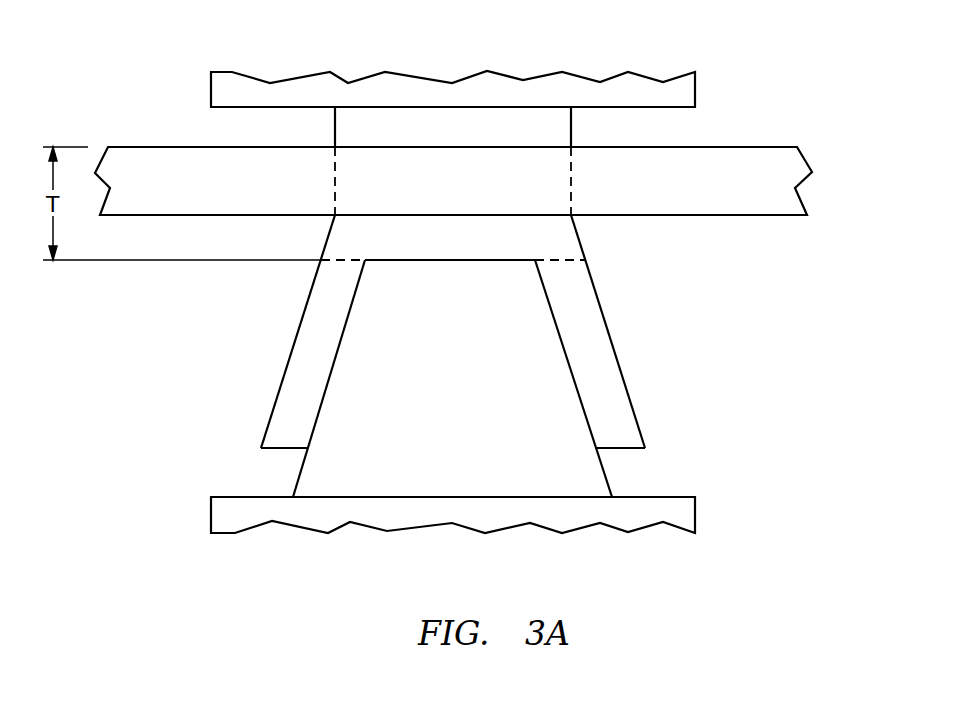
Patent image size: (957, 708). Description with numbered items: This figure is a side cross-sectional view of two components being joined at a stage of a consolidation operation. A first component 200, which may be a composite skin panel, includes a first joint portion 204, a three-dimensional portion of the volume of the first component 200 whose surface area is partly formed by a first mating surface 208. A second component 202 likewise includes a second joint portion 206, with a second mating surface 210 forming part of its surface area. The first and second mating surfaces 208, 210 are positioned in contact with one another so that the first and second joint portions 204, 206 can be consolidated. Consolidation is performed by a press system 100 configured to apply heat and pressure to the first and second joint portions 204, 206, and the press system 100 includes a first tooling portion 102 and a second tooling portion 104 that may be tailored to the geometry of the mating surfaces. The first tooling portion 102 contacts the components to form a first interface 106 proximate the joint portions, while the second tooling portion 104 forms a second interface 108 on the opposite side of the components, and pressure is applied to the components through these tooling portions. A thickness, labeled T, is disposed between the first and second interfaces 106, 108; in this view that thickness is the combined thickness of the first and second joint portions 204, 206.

The press system 100 is at (712, 87).
The first tooling portion 102 is at (485, 138).
The second tooling portion 104 is at (475, 422).
The first interface 106 is at (523, 147).
The second interface 108 is at (398, 260).
The first component 200 is at (523, 177).
The second component 202 is at (648, 346).
The first joint portion 204 is at (485, 192).
The second joint portion 206 is at (485, 249).
The first mating surface 208 is at (524, 217).
The second mating surface 210 is at (358, 216).